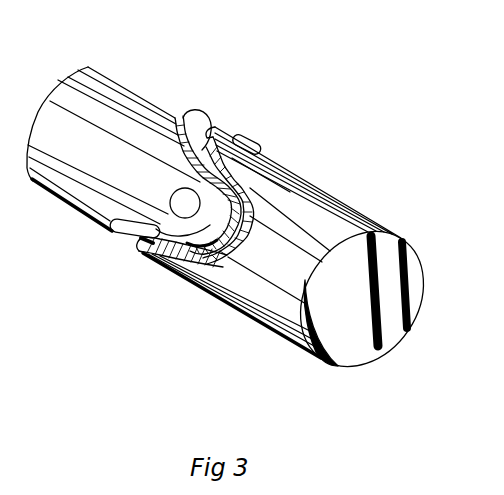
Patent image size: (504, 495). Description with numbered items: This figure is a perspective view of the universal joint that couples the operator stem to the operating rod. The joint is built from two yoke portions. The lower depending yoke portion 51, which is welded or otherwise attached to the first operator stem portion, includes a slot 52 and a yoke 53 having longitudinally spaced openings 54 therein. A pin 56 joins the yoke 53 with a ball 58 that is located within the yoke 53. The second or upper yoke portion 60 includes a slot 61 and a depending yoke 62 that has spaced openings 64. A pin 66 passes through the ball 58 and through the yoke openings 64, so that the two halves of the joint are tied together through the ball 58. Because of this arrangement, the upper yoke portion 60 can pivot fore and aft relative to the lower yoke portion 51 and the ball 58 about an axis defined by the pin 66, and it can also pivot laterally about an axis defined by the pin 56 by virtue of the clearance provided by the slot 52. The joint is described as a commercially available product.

The lower depending yoke portion 51 is at (260, 290).
The slot 52 is at (196, 256).
The yoke 53 is at (157, 262).
The longitudinally spaced openings 54 is at (250, 153).
The pin 56 is at (240, 146).
The ball 58 is at (212, 134).
The upper yoke portion 60 is at (122, 86).
The slot 61 is at (195, 118).
The depending yoke 62 is at (83, 215).
The spaced openings 64 is at (178, 218).
The pin 66 is at (184, 204).